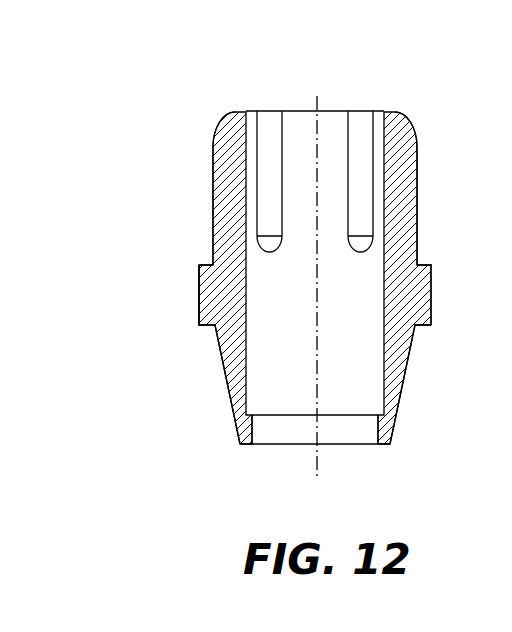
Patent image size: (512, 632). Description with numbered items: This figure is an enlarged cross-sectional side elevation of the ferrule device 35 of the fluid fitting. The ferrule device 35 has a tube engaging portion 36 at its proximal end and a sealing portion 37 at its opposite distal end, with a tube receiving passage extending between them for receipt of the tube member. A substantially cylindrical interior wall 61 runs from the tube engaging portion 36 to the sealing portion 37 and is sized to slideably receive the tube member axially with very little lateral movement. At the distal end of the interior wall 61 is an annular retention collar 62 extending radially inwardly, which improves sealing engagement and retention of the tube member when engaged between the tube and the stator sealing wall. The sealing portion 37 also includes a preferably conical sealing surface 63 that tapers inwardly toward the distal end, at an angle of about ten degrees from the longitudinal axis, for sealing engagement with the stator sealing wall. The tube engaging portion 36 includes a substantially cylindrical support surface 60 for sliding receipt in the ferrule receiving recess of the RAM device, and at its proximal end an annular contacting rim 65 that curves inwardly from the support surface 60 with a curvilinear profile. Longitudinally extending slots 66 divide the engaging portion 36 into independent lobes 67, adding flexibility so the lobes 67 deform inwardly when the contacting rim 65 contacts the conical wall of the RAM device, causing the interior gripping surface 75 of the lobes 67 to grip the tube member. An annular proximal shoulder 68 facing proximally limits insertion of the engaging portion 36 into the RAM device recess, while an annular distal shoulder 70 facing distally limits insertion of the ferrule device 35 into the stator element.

The ferrule device 35 is at (187, 308).
The tube engaging portion 36 is at (156, 123).
The sealing portion 37 is at (198, 333).
The support surface 60 is at (213, 208).
The interior wall 61 is at (383, 272).
The retention collar 62 is at (253, 437).
The sealing surface 63 is at (400, 420).
The contacting rim 65 is at (222, 118).
The slot 66 is at (363, 125).
The lobe 67 is at (417, 170).
The annular proximal shoulder 68 is at (430, 262).
The annular distal shoulder 70 is at (431, 330).
The interior gripping surface 75 is at (247, 162).